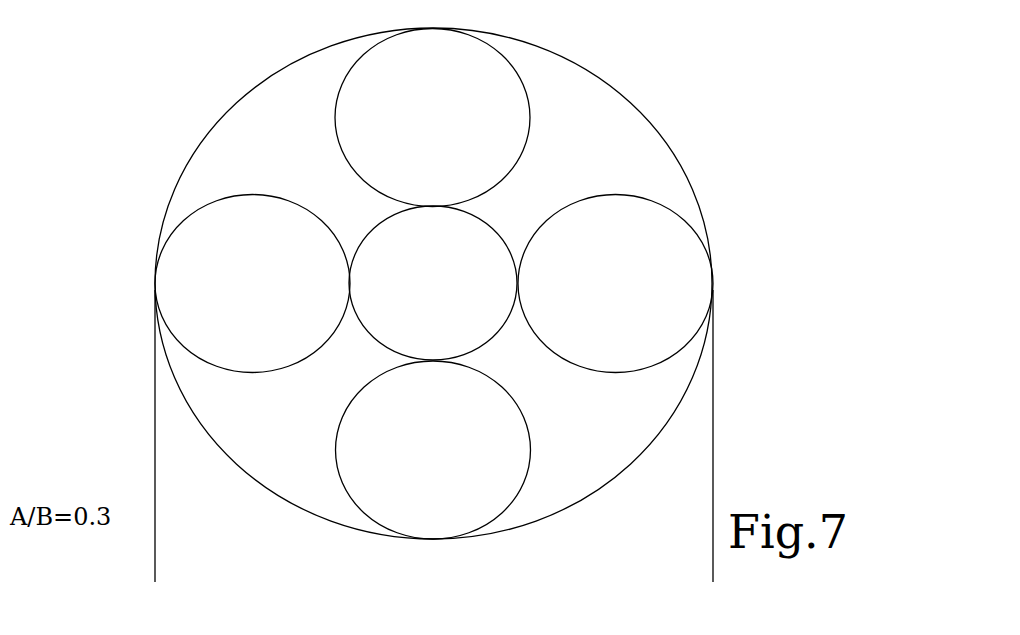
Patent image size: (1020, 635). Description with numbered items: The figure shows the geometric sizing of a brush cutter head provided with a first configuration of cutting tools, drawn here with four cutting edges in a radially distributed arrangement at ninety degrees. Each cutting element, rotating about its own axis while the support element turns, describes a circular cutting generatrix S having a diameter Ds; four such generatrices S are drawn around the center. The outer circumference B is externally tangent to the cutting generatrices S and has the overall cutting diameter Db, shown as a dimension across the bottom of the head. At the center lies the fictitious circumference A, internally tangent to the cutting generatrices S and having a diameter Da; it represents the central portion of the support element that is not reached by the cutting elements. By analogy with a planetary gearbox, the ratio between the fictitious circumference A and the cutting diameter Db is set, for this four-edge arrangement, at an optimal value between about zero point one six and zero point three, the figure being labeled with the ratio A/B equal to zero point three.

The circumference B is at (697, 378).
The cutting generatrix S is at (332, 118).
The diameter of the cutting generatrix Ds is at (526, 103).
The fictitious circumference A is at (380, 345).
The diameter of the fictitious circumference Da is at (496, 237).
The cutting diameter Db is at (712, 572).